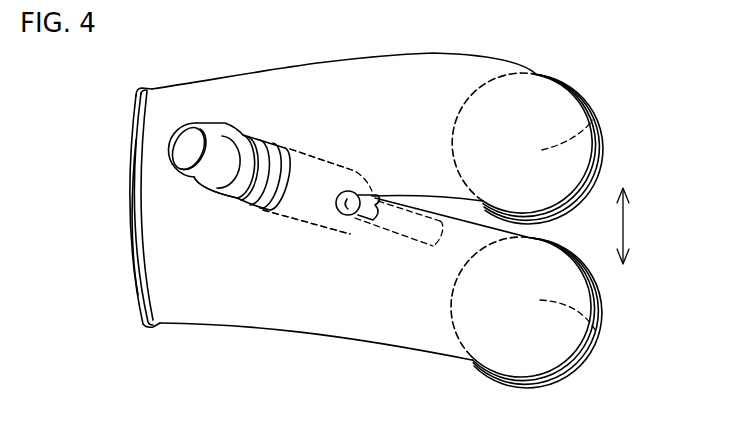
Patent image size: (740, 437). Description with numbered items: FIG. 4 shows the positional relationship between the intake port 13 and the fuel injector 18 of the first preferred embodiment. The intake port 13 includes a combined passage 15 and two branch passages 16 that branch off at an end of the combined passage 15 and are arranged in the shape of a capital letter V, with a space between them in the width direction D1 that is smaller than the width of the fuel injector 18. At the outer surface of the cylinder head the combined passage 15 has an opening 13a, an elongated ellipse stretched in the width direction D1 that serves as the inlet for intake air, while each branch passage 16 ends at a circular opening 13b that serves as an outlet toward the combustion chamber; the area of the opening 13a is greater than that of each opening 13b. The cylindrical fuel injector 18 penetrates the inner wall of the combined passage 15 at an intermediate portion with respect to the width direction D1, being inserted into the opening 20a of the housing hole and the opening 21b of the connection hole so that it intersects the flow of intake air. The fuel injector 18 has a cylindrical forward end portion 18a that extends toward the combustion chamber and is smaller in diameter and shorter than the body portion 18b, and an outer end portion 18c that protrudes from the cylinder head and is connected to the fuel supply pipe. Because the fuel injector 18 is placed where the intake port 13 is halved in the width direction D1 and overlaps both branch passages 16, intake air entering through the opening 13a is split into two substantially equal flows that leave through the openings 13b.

The intake port 13 is at (133, 104).
The opening of the combined passage 13a is at (130, 219).
The opening of the branch passage 13b is at (596, 117).
The combined passage 15 is at (257, 91).
The branch passages 16 is at (463, 68).
The fuel injector 18 is at (170, 144).
The forward end portion 18a is at (406, 240).
The body portion 18b is at (292, 219).
The outer end portion 18c is at (214, 187).
The opening of the housing hole 20a is at (372, 193).
The opening of the connection hole 21b is at (293, 148).
The width direction D1 is at (624, 225).